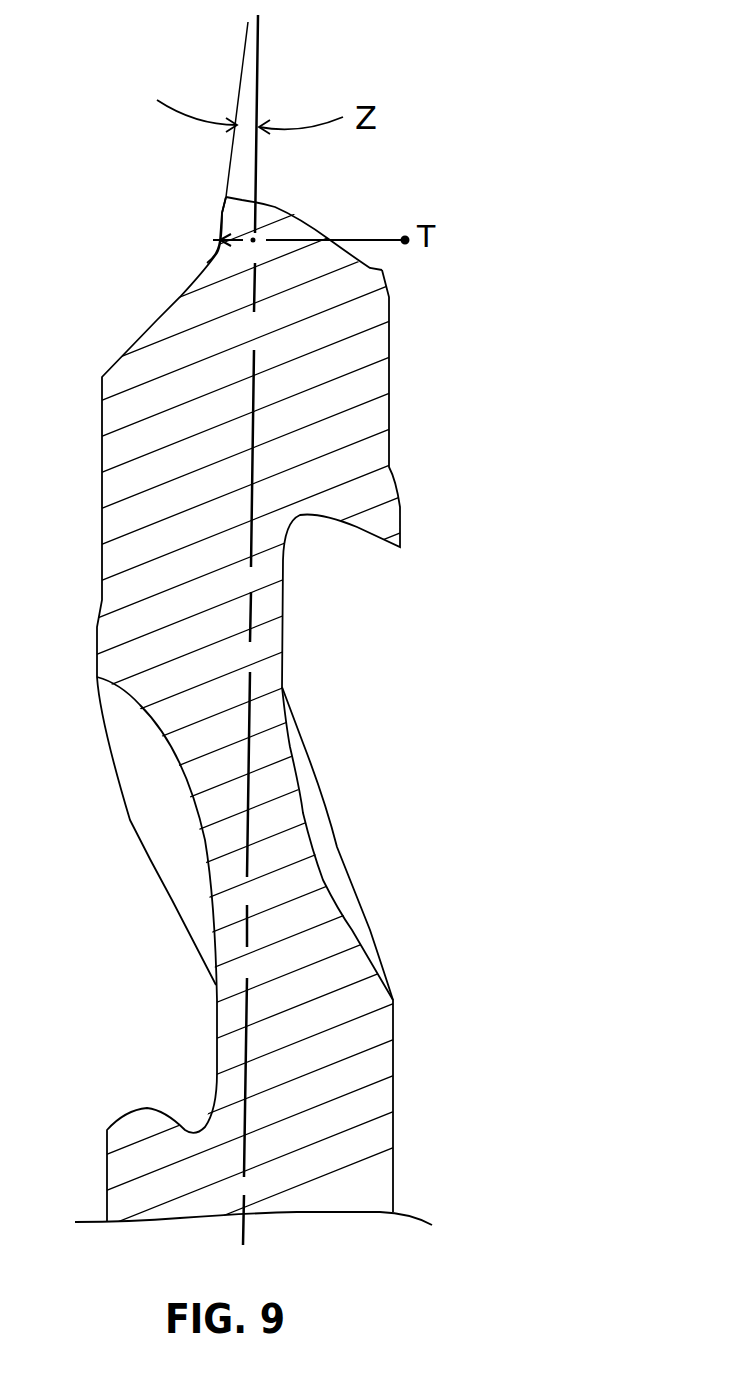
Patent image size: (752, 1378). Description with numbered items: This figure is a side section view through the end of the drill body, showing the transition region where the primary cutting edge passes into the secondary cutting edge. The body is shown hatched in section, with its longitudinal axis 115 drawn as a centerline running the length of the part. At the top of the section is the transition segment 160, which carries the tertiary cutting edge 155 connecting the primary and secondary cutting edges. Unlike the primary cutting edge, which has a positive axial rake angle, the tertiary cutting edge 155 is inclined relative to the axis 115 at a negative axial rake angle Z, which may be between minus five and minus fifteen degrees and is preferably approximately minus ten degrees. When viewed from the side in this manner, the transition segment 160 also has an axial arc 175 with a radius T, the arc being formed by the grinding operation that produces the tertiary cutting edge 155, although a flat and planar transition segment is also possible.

The longitudinal axis 115 is at (260, 72).
The tertiary cutting edge 155 is at (227, 193).
The transition segment 160 is at (223, 213).
The axial arc 175 is at (223, 238).